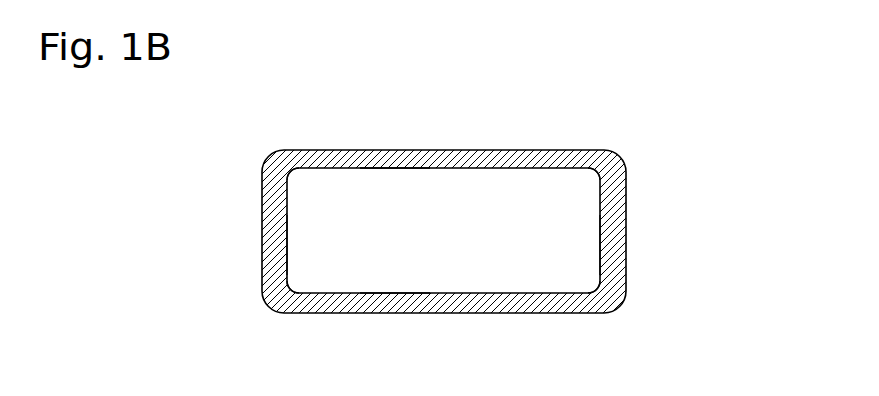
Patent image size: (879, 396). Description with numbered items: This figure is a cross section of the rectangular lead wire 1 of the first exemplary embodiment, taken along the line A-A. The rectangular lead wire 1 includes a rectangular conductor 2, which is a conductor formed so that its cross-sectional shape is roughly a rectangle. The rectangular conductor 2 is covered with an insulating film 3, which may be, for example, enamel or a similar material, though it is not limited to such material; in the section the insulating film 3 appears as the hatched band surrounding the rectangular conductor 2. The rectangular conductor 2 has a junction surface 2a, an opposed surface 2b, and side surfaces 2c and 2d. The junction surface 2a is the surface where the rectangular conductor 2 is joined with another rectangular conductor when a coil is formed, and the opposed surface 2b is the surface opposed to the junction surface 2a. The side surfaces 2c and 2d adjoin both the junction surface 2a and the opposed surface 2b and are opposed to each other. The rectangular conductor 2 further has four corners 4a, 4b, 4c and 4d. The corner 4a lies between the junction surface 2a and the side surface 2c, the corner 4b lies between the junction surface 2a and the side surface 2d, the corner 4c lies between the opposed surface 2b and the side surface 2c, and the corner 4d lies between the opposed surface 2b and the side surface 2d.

The rectangular lead wire 1 is at (616, 79).
The rectangular conductor 2 is at (477, 286).
The junction surface 2a is at (396, 298).
The opposed surface 2b is at (397, 163).
The side surface 2c is at (285, 247).
The side surface 2d is at (602, 246).
The insulating film 3 is at (627, 208).
The corner 4a is at (282, 302).
The corner 4b is at (606, 302).
The corner 4c is at (282, 162).
The corner 4d is at (604, 162).